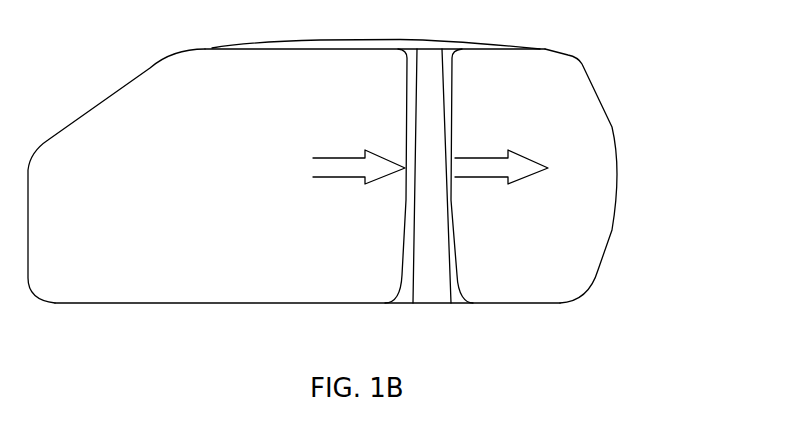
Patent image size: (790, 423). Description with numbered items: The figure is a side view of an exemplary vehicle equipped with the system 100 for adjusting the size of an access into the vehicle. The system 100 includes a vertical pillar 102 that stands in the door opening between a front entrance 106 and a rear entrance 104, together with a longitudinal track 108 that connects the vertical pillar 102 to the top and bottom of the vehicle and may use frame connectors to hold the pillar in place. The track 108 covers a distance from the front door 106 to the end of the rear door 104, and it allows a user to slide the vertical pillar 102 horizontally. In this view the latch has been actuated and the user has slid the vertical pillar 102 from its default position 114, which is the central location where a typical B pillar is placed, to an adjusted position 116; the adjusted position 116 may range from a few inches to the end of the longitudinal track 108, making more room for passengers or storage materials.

The system 100 is at (364, 180).
The vertical pillar 102 is at (432, 140).
The rear entrance 104 is at (565, 238).
The front entrance 106 is at (147, 274).
The longitudinal track 108 is at (217, 45).
The default position 114 is at (277, 43).
The adjusted position 116 is at (433, 49).